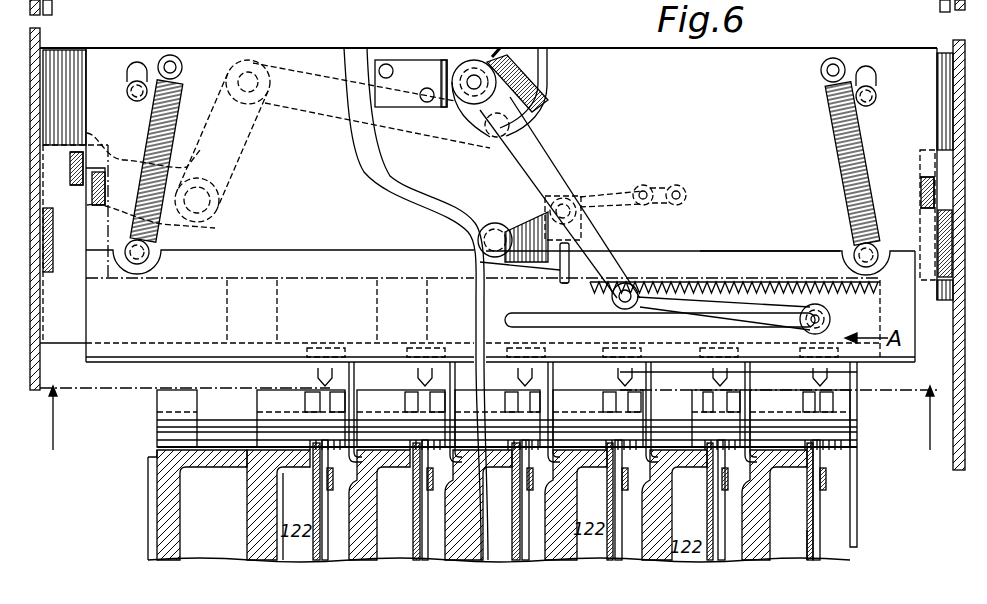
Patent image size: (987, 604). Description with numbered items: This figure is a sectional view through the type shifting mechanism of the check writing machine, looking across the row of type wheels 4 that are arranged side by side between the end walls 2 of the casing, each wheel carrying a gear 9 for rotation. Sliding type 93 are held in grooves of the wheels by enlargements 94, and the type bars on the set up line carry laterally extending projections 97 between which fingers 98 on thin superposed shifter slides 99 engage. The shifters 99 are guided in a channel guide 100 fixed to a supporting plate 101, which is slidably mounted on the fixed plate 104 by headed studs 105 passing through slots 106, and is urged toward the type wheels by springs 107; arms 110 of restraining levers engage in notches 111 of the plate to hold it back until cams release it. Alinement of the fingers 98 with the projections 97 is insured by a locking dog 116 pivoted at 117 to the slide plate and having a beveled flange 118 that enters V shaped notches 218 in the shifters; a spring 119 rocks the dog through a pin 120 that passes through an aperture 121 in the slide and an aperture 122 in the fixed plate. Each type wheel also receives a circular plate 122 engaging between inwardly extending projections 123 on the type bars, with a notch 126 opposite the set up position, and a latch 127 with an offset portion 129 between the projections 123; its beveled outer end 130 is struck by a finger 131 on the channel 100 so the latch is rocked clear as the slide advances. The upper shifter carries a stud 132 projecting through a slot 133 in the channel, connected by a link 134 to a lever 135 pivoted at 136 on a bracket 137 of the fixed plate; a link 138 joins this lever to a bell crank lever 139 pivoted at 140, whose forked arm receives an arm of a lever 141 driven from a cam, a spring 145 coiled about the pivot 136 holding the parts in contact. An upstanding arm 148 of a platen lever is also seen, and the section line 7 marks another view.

The end wall 2 is at (32, 232).
The type wheel 4 is at (163, 517).
The section line 7 is at (477, 414).
The gear 9 is at (250, 465).
The sliding type 93 is at (592, 400).
The enlargement 94 is at (598, 431).
The laterally extending projection 97 is at (318, 402).
The finger 98 is at (318, 376).
The shifter slide 99 is at (513, 318).
The channel guide 100 is at (423, 275).
The supporting plate 101 is at (770, 230).
The fixed plate 104 is at (942, 62).
The headed stud 105 is at (137, 94).
The slot 106 is at (136, 74).
The spring 107 is at (153, 160).
The lever arm 110 is at (97, 200).
The notch 111 is at (922, 193).
The locking dog 116 is at (546, 197).
The pivot 117 is at (483, 200).
The beveled flange 118 is at (567, 270).
The spring 119 is at (646, 190).
The pin 120 is at (563, 205).
The lever arm 121 is at (548, 204).
The circular plate 122 is at (568, 247).
The inwardly extending projection 123 is at (541, 516).
The notch 126 is at (808, 528).
The latch 127 is at (425, 513).
The offset portion 129 is at (830, 458).
The outer end 130 is at (857, 427).
The finger 131 is at (858, 373).
The stud 132 is at (830, 318).
The slot 133 is at (610, 292).
The link 134 is at (707, 307).
The lever 135 is at (531, 152).
The pivot 136 is at (478, 82).
The bracket 137 is at (411, 83).
The link 138 is at (308, 105).
The bell crank lever 139 is at (222, 140).
The pivot 140 is at (213, 200).
The lever 141 is at (63, 169).
The spring 145 is at (495, 54).
The upstanding arm 148 is at (40, 218).
The V shaped notch 218 is at (780, 288).